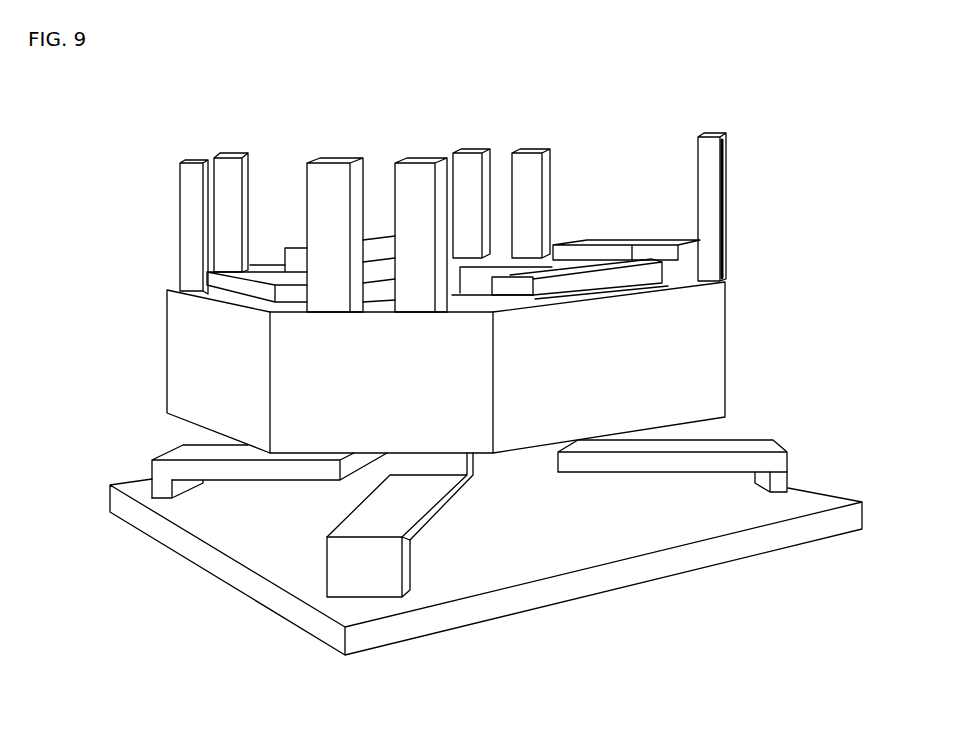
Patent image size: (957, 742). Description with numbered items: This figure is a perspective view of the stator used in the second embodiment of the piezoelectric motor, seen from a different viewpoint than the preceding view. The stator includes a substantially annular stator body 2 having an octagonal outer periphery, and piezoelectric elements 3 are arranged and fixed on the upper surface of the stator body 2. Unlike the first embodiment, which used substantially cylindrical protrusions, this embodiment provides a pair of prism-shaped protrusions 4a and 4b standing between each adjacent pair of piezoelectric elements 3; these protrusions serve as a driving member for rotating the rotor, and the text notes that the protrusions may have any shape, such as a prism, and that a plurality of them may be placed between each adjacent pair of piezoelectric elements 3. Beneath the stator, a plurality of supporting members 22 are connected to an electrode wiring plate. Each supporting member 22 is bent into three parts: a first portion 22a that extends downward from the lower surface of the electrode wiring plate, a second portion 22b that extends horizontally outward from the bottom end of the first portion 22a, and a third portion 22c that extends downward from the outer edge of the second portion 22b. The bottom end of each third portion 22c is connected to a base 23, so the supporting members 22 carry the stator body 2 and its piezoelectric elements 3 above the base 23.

The stator body 2 is at (697, 333).
The piezoelectric elements 3 is at (291, 241).
The prism-shaped protrusion 4a is at (470, 150).
The prism-shaped protrusion 4b is at (532, 150).
The supporting member 22 is at (467, 562).
The first portion 22a is at (478, 463).
The second portion 22b is at (240, 486).
The third portion 22c is at (160, 492).
The base 23 is at (793, 548).